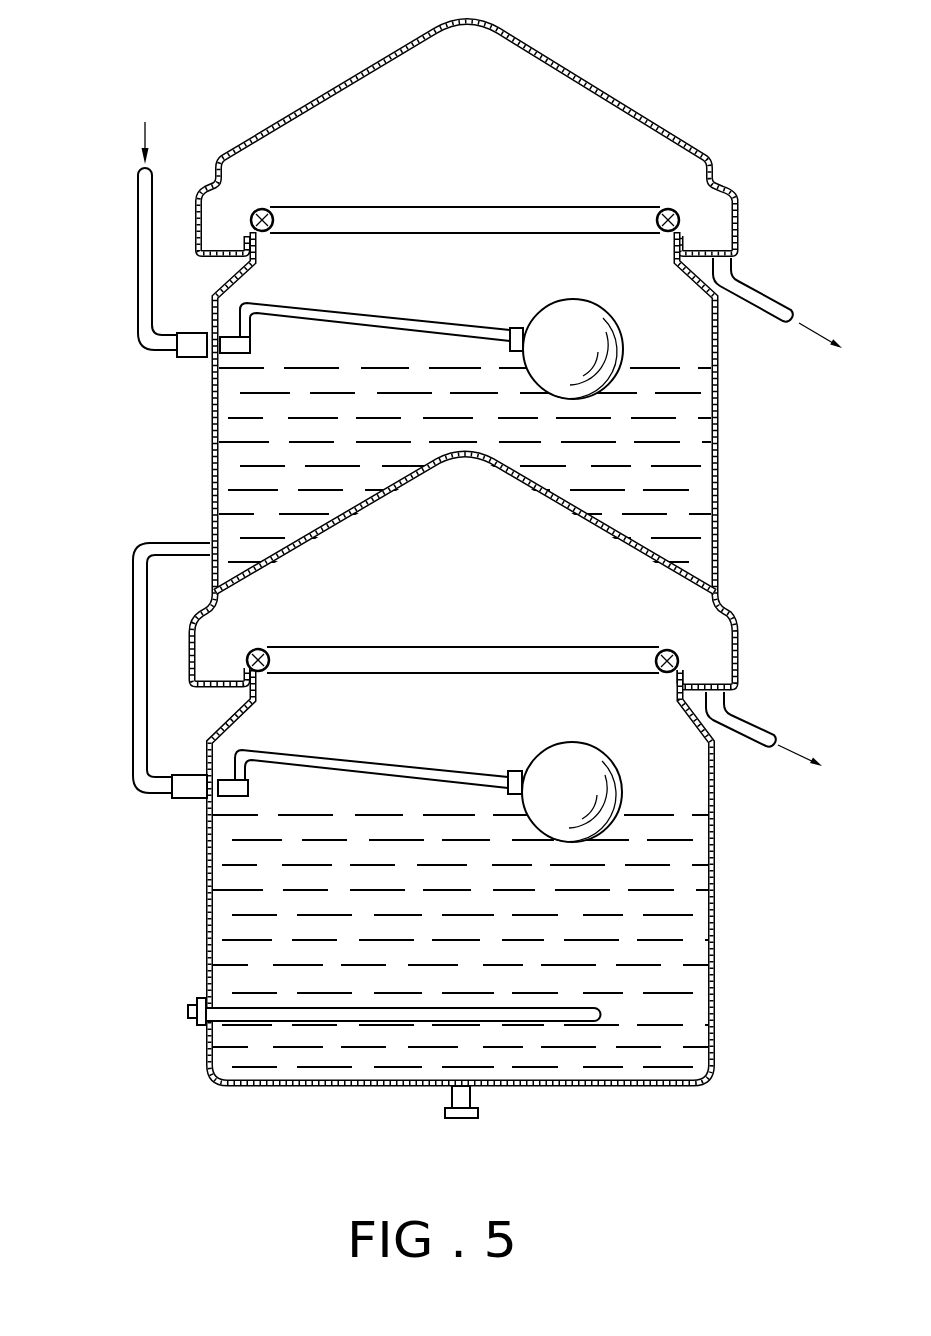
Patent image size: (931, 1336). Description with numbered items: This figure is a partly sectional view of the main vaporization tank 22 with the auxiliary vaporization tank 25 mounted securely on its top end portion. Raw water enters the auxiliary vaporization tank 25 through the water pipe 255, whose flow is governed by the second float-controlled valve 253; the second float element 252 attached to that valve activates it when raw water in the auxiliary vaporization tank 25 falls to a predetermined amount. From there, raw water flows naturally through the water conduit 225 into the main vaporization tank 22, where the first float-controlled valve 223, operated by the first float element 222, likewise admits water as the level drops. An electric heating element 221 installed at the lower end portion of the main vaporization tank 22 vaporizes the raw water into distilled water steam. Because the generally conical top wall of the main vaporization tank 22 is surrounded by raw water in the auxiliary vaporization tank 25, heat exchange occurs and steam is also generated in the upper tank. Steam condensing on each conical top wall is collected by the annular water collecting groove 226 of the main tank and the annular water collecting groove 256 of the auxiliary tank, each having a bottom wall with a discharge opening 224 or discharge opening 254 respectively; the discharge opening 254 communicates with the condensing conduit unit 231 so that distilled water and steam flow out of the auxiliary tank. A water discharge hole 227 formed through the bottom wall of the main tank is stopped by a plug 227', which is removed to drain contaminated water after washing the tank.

The main vaporization tank 22 is at (716, 867).
The auxiliary vaporization tank 25 is at (647, 118).
The electric heating element 221 is at (584, 1020).
The first float element 222 is at (578, 770).
The first float-controlled valve 223 is at (193, 794).
The discharge opening 224 is at (737, 665).
The water conduit 225 is at (137, 586).
The annular water collecting groove 226 is at (224, 678).
The water discharge hole 227 is at (425, 1127).
The plug 227' is at (500, 1130).
The condensing conduit unit 231 is at (767, 312).
The second float element 252 is at (588, 317).
The second float-controlled valve 253 is at (192, 350).
The discharge opening 254 is at (735, 248).
The water pipe 255 is at (141, 248).
The annular water collecting groove 256 is at (233, 246).